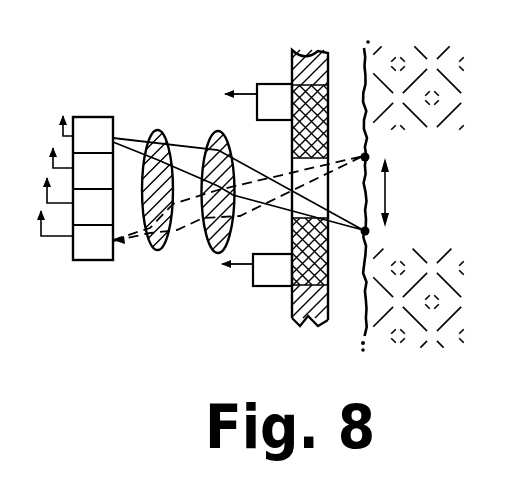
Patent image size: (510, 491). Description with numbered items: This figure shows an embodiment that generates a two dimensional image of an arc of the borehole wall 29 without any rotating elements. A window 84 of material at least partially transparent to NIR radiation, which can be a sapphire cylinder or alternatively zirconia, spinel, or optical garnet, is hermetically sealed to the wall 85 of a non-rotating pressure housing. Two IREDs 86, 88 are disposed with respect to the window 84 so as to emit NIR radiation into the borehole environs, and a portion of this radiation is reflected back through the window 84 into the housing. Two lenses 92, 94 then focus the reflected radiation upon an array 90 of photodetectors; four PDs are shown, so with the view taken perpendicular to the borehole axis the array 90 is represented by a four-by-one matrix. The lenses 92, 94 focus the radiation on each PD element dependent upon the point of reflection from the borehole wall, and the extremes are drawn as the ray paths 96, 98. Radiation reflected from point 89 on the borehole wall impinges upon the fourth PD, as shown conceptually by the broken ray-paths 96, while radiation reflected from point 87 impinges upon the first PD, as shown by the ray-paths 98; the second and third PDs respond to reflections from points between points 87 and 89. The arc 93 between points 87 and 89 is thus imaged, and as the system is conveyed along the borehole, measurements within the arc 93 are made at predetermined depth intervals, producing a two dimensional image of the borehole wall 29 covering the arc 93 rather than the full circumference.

The array of PDs 90 is at (106, 106).
The lens 92 is at (148, 131).
The lens 94 is at (208, 135).
The ray-paths 98 is at (262, 173).
The broken ray-paths 96 is at (263, 209).
The wall of the pressure housing 85 is at (328, 54).
The window 84 is at (328, 100).
The IRED 88 is at (272, 84).
The IRED 86 is at (272, 287).
The borehole wall 29 is at (365, 300).
The point on the borehole wall 89 is at (369, 155).
The point on the borehole wall 87 is at (369, 231).
The arc 93 is at (386, 190).